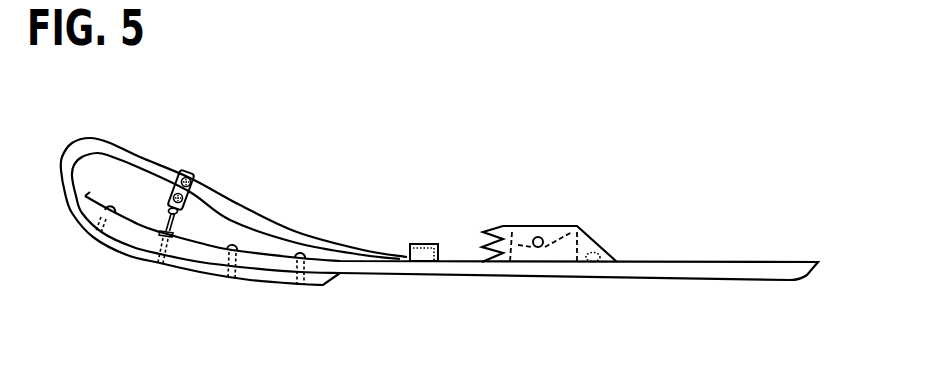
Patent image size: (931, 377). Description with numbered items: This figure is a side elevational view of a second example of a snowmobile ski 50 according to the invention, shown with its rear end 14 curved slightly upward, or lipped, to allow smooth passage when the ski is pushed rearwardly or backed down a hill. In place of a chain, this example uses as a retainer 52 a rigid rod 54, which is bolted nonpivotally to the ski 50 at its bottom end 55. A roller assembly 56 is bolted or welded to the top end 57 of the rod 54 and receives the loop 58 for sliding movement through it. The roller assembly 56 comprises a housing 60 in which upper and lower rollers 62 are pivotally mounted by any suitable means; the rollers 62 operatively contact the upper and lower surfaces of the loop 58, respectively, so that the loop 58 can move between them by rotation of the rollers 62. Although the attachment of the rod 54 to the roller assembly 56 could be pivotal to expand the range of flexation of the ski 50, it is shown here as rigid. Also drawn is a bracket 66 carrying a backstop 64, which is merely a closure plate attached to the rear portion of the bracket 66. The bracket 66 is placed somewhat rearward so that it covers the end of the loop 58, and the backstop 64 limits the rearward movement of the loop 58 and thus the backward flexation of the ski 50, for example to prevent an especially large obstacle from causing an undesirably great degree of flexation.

The rear end 14 is at (812, 277).
The snowmobile ski 50 is at (697, 147).
The retainer 52 is at (168, 221).
The rigid rod 54 is at (172, 216).
The bottom end 55 is at (167, 237).
The roller assembly 56 is at (186, 173).
The top end 57 is at (178, 209).
The loop 58 is at (128, 147).
The housing 60 is at (193, 188).
The rollers 62 is at (195, 180).
The backstop 64 is at (440, 262).
The bracket 66 is at (424, 245).